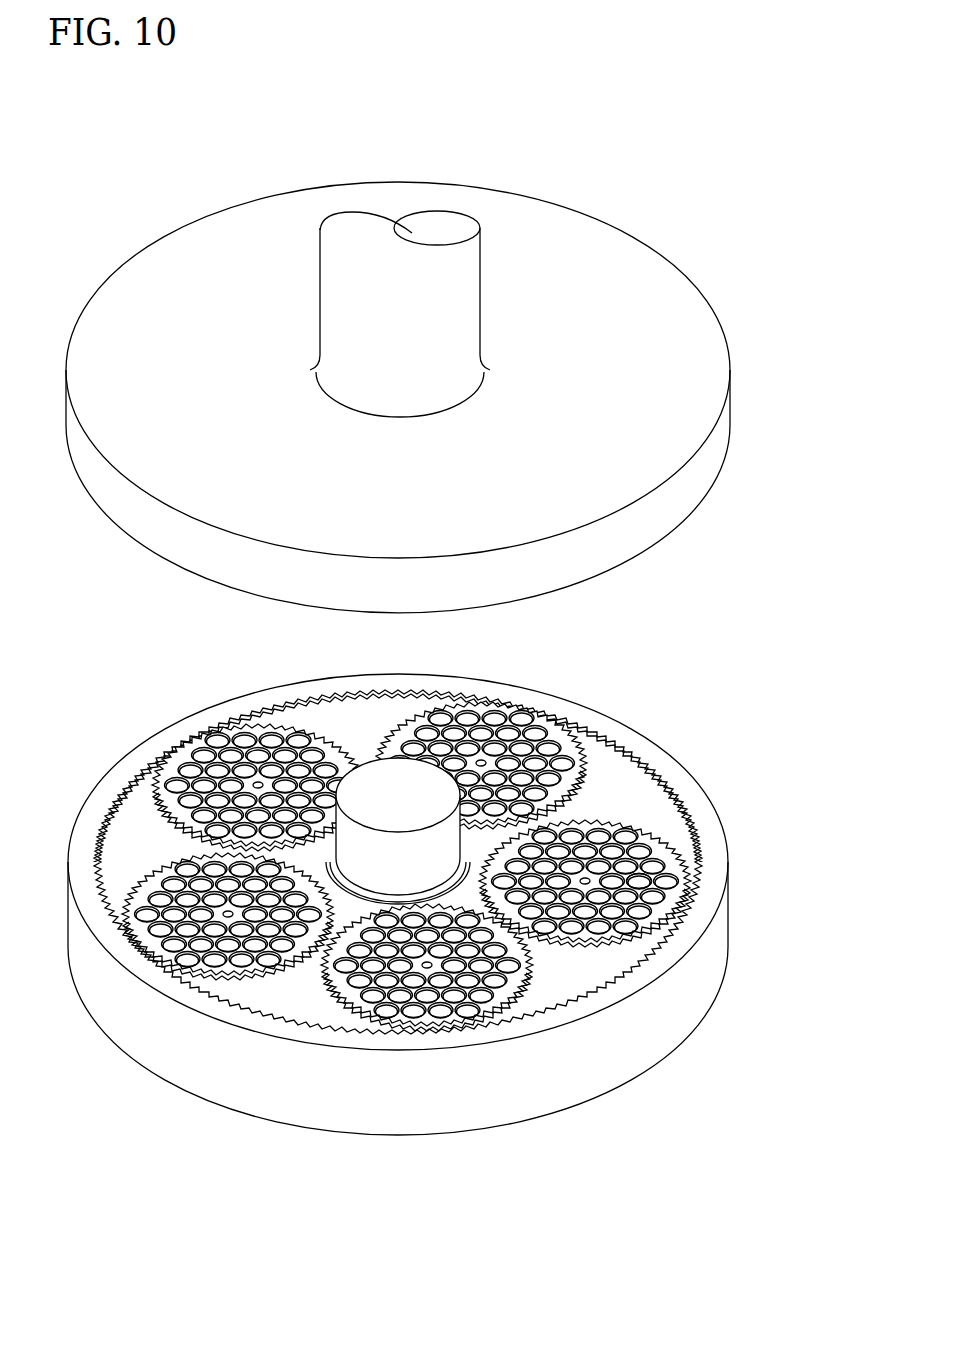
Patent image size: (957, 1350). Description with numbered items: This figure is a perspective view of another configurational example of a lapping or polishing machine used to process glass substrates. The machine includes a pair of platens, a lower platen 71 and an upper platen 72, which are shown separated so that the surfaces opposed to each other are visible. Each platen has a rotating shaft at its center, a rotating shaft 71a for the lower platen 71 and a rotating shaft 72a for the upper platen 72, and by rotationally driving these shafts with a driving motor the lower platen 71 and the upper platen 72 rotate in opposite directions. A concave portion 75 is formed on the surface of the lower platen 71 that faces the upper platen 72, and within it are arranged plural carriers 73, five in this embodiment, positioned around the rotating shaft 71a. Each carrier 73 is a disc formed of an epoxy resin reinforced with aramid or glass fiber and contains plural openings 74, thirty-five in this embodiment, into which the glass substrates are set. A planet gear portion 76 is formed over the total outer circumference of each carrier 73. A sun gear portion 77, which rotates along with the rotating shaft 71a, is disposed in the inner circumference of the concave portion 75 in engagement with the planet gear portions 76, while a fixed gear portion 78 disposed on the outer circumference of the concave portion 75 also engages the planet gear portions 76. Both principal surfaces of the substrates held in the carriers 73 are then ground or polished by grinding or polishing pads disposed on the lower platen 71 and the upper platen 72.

The lower platen 71 is at (673, 1010).
The rotating shaft 71a is at (377, 783).
The upper platen 72 is at (677, 307).
The rotating shaft 72a is at (407, 263).
The carrier 73 is at (533, 717).
The opening 74 is at (637, 884).
The concave portion 75 is at (137, 837).
The planet gear portion 76 is at (647, 827).
The sun gear portion 77 is at (468, 847).
The fixed gear portion 78 is at (647, 767).